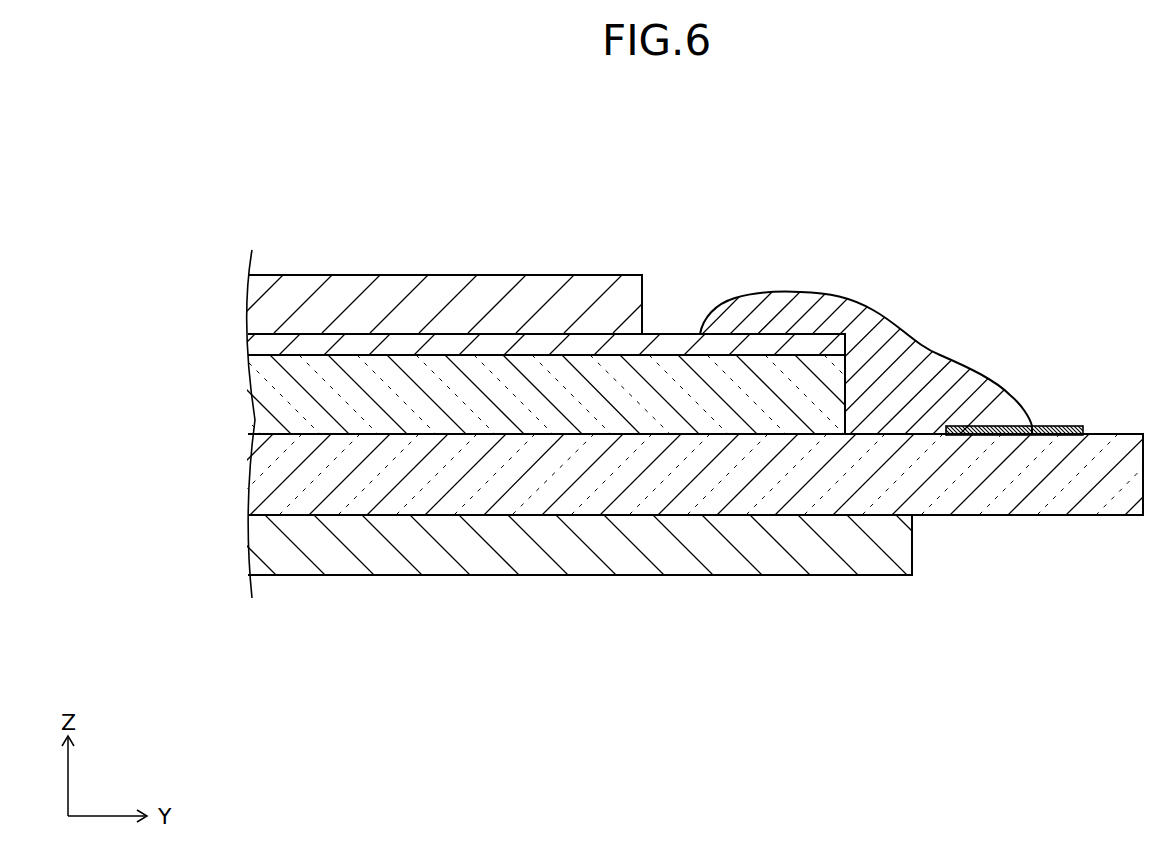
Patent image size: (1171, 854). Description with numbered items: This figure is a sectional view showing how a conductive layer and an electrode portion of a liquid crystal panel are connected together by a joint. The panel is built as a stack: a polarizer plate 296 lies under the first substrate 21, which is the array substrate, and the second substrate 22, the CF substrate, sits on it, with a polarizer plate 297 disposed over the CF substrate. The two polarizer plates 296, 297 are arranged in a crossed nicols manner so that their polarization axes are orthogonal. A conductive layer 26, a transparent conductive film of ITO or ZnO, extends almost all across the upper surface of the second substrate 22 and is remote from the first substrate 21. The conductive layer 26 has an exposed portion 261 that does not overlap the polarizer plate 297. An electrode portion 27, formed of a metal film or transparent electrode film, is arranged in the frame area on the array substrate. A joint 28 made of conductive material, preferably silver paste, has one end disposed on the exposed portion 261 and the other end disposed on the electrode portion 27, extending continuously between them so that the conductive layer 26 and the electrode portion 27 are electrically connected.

The first substrate 21 is at (1015, 502).
The second substrate 22 is at (477, 390).
The conductive layer 26 is at (320, 343).
The exposed portion 261 is at (667, 343).
The electrode portion 27 is at (1057, 423).
The joint 28 is at (883, 337).
The polarizer plate 296 is at (542, 560).
The polarizer plate 297 is at (387, 288).